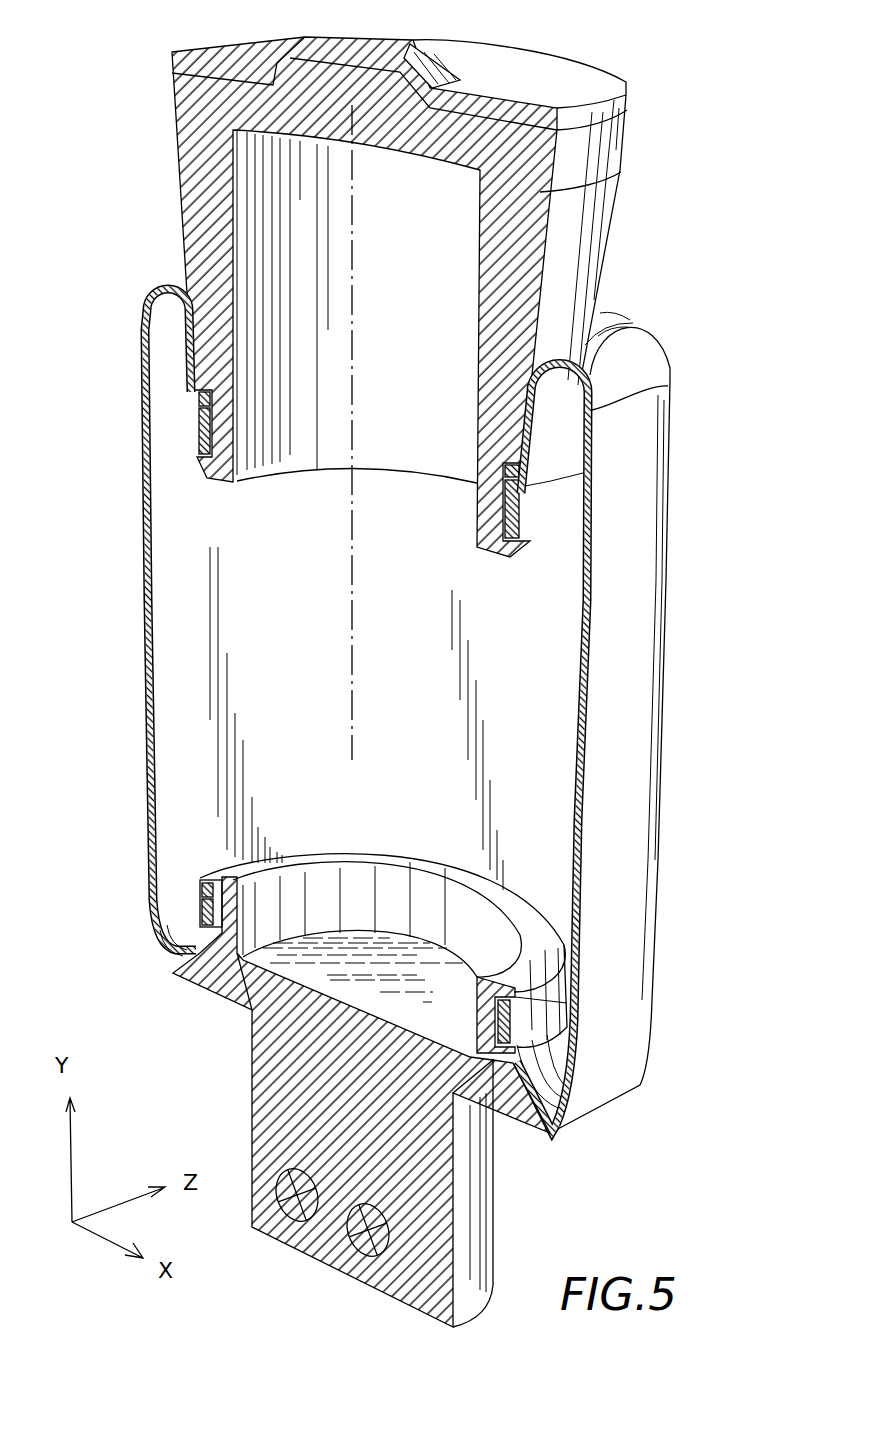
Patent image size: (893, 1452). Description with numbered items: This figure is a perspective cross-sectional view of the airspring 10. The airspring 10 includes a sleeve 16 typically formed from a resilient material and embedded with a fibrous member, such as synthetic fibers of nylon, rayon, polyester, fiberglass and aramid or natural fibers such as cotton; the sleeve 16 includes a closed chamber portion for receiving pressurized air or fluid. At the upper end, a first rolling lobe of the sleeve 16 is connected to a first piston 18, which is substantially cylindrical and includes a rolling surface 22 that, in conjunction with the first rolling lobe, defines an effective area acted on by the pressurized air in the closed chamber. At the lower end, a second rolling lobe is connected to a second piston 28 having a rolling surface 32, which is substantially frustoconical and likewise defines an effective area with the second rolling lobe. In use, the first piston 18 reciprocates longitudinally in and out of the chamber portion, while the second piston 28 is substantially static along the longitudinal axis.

The airspring 10 is at (723, 318).
The sleeve 16 is at (627, 713).
The first piston 18 is at (533, 173).
The rolling surface 22 is at (563, 227).
The second piston 28 is at (520, 1100).
The rolling surface 32 is at (560, 1120).